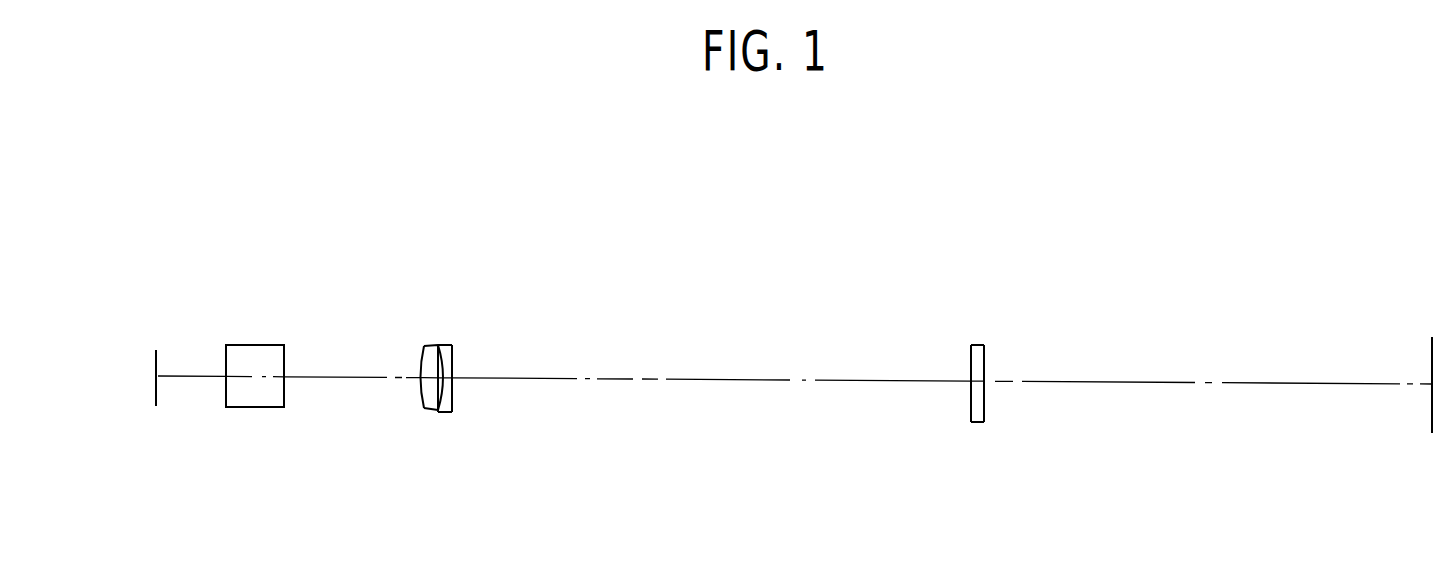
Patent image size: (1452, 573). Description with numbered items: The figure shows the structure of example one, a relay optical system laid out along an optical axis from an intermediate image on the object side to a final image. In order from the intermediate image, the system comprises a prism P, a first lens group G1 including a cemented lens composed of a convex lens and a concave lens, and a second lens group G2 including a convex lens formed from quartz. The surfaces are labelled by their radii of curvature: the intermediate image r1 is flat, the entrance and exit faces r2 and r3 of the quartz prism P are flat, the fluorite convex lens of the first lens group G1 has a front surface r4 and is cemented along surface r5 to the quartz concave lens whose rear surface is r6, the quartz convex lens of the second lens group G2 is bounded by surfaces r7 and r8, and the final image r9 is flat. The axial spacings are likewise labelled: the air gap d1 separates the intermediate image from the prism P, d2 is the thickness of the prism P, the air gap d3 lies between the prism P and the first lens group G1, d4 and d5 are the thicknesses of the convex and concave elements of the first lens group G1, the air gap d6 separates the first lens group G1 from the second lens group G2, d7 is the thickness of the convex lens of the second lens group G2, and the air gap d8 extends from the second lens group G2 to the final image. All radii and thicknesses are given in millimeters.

The intermediate image surface r1 is at (157, 351).
The second lens surface r2 is at (226, 361).
The third lens surface r3 is at (284, 357).
The fourth lens surface r4 is at (420, 357).
The fifth lens surface r5 is at (440, 357).
The sixth lens surface r6 is at (452, 356).
The seventh lens surface r7 is at (971, 355).
The eighth lens surface r8 is at (984, 355).
The final image surface r9 is at (1432, 352).
The air gap d1 is at (187, 377).
The prism thickness d2 is at (252, 377).
The air gap d3 is at (343, 378).
The lens thickness d4 is at (422, 385).
The lens thickness d5 is at (450, 385).
The air gap d6 is at (556, 380).
The lens thickness d7 is at (980, 383).
The air gap d8 is at (1152, 385).
The prism P is at (243, 409).
The first lens group G1 is at (435, 412).
The second lens group G2 is at (975, 423).